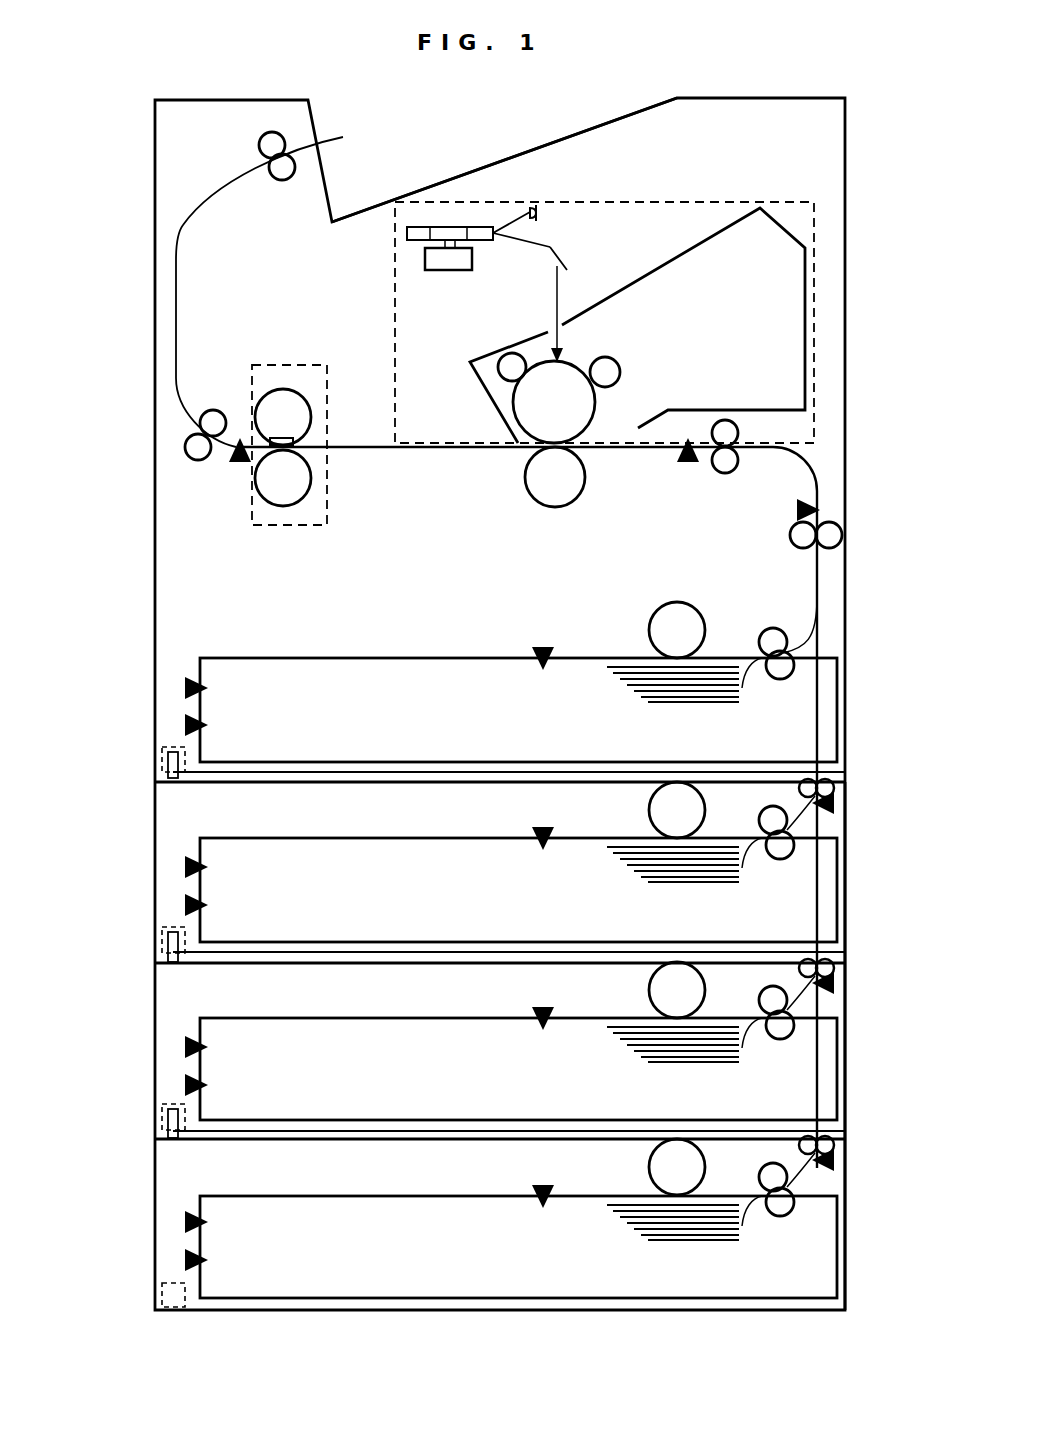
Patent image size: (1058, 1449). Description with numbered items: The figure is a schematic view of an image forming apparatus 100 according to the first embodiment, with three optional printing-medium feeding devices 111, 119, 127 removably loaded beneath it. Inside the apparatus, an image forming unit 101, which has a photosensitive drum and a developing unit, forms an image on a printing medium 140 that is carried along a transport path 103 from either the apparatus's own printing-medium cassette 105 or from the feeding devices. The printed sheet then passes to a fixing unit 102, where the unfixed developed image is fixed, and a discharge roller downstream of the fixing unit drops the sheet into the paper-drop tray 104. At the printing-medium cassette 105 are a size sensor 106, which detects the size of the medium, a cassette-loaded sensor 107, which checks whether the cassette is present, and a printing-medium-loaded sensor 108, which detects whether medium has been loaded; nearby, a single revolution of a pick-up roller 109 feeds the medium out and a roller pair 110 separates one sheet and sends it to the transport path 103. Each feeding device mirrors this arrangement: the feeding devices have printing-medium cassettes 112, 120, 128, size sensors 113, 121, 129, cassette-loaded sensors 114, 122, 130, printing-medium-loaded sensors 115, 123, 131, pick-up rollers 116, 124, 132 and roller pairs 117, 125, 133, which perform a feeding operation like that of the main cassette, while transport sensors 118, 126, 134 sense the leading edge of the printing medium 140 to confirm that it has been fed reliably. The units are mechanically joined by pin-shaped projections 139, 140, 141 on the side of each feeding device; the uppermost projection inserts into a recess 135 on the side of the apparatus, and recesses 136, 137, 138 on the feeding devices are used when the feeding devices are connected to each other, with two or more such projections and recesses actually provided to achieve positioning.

The image forming apparatus 100 is at (847, 165).
The image forming unit 101 is at (732, 200).
The fixing unit 102 is at (302, 363).
The transport path 103 is at (372, 449).
The paper-drop tray 104 is at (486, 166).
The printing-medium cassette 105 is at (848, 673).
The size sensor 106 is at (185, 725).
The cassette-loaded sensor 107 is at (185, 688).
The printing-medium-loaded sensor 108 is at (542, 645).
The pick-up roller 109 is at (669, 601).
The roller pair 110 is at (778, 681).
The printing-medium feeding device 111 is at (848, 835).
The printing-medium cassette 112 is at (838, 877).
The size sensor 113 is at (185, 905).
The cassette-loaded sensor 114 is at (185, 867).
The printing-medium-loaded sensor 115 is at (540, 828).
The pick-up roller 116 is at (649, 810).
The roller pair 117 is at (780, 860).
The transport sensor 118 is at (840, 800).
The printing-medium feeding device 119 is at (848, 1018).
The printing-medium cassette 120 is at (838, 1058).
The size sensor 121 is at (185, 1085).
The cassette-loaded sensor 122 is at (185, 1047).
The printing-medium-loaded sensor 123 is at (540, 1008).
The pick-up roller 124 is at (649, 993).
The roller pair 125 is at (780, 1040).
The transport sensor 126 is at (840, 980).
The printing-medium feeding device 127 is at (848, 1200).
The printing-medium cassette 128 is at (838, 1240).
The size sensor 129 is at (185, 1260).
The cassette-loaded sensor 130 is at (185, 1222).
The printing-medium-loaded sensor 131 is at (540, 1186).
The pick-up roller 132 is at (649, 1168).
The roller pair 133 is at (780, 1217).
The transport sensor 134 is at (840, 1158).
The recess 135 is at (160, 748).
The recess 136 is at (160, 928).
The recess 137 is at (160, 1106).
The recess 138 is at (160, 1298).
The pin-shaped projection 139 is at (167, 775).
The printing medium 140 is at (686, 703).
The pin-shaped projection 141 is at (167, 1134).